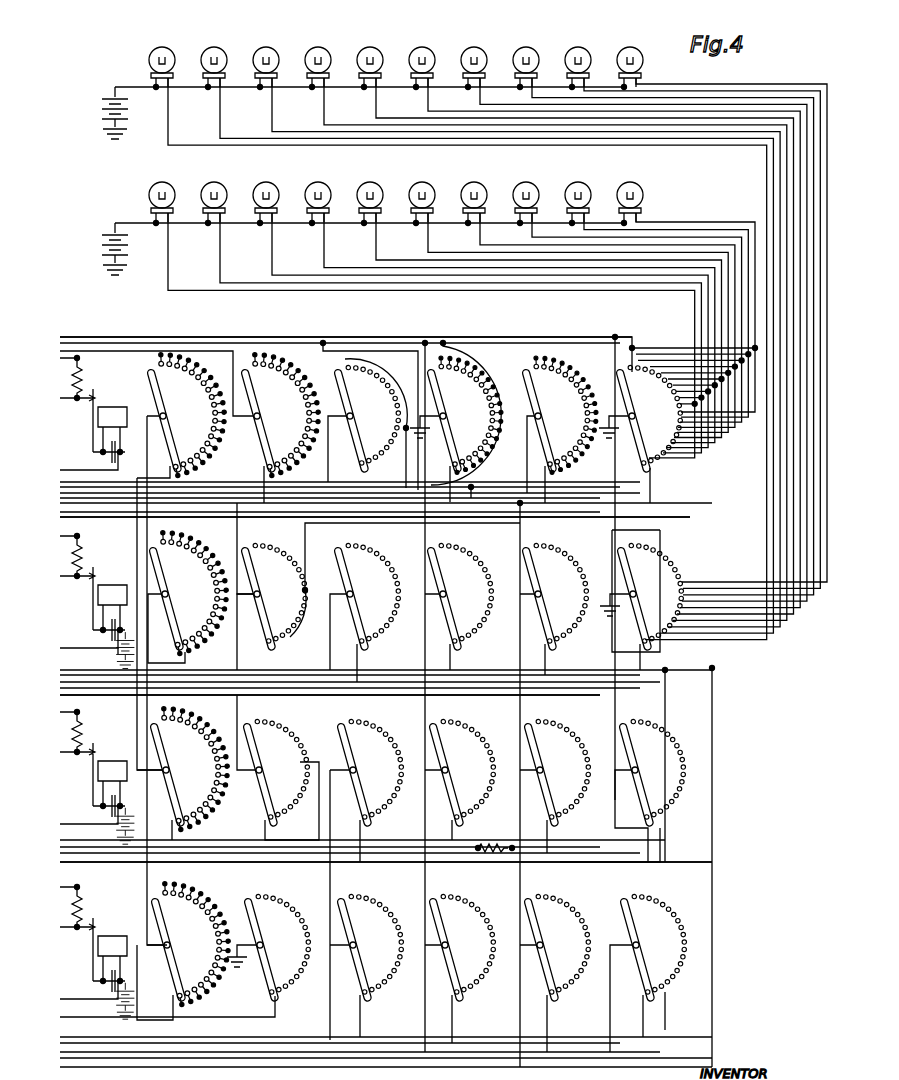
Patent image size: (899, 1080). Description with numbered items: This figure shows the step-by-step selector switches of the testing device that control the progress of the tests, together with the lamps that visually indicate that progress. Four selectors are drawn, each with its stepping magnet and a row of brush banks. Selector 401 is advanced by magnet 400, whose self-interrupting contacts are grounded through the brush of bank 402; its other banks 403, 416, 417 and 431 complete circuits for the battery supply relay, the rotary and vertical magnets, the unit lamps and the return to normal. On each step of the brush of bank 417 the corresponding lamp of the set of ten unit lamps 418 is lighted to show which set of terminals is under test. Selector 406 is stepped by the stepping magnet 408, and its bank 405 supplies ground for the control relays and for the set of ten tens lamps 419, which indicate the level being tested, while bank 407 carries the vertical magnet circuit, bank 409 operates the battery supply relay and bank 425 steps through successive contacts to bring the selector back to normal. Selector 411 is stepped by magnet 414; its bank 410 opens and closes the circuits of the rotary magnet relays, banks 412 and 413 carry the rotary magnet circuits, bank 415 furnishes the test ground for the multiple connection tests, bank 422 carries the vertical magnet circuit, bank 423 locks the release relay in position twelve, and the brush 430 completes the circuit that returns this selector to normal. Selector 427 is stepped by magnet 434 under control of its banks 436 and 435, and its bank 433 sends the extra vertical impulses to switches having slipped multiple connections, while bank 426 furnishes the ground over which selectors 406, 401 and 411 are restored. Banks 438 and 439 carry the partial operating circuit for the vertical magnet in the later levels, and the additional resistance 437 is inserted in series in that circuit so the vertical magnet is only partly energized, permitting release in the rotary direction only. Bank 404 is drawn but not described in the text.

The magnet 400 is at (114, 403).
The selector 401 is at (346, 326).
The bank 402 is at (456, 422).
The bank 403 is at (370, 416).
The rotary switch 404 is at (378, 596).
The bank 405 is at (642, 600).
The selector 406 is at (375, 529).
The bank 407 is at (554, 609).
The stepping magnet 408 is at (114, 581).
The bank 409 is at (277, 780).
The bank 410 is at (623, 790).
The selector 411 is at (330, 703).
The bank 412 is at (555, 786).
The bank 413 is at (365, 612).
The magnet 414 is at (114, 757).
The bank 415 is at (560, 429).
The bank 416 is at (190, 427).
The bank 417 is at (641, 425).
The unit lamps 418 is at (430, 303).
The tens lamps 419 is at (464, 327).
The bank 422 is at (460, 779).
The bank 423 is at (278, 767).
The bank 425 is at (188, 597).
The bank 426 is at (183, 951).
The selector 427 is at (386, 874).
The brush 430 is at (183, 773).
The bank 431 is at (181, 415).
The bank 433 is at (555, 973).
The magnet 434 is at (114, 932).
The bank 435 is at (460, 968).
The bank 436 is at (648, 973).
The additional resistance 437 is at (488, 842).
The bank 438 is at (367, 965).
The bank 439 is at (367, 790).